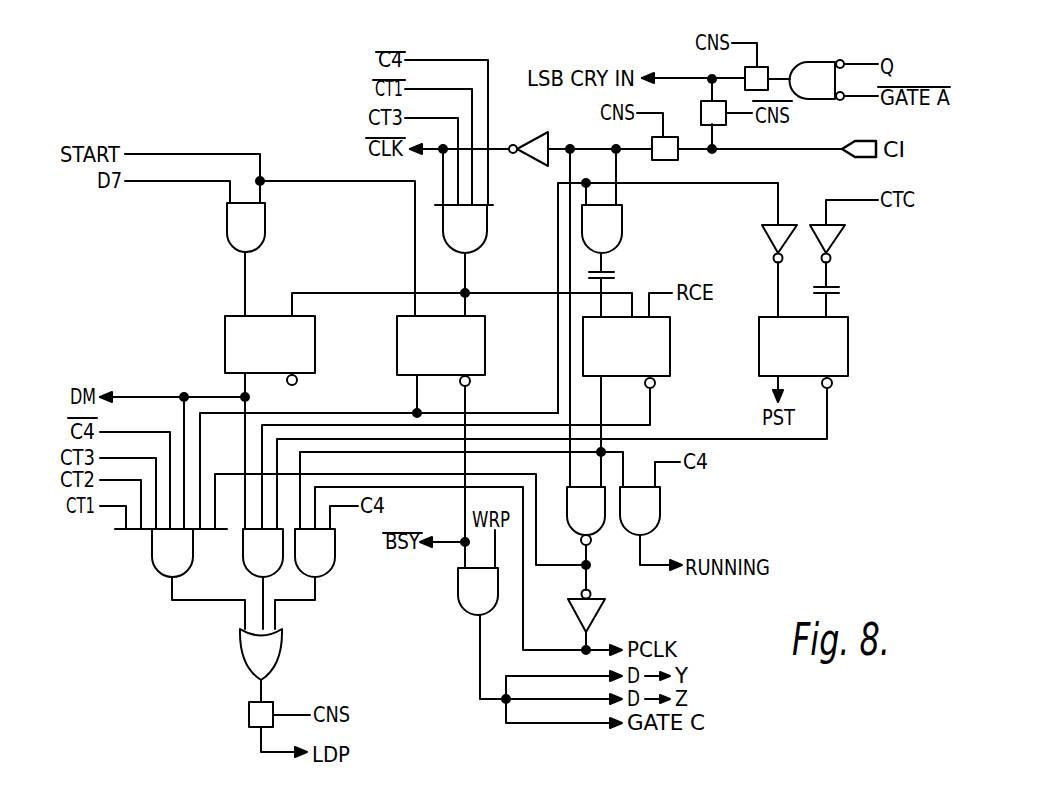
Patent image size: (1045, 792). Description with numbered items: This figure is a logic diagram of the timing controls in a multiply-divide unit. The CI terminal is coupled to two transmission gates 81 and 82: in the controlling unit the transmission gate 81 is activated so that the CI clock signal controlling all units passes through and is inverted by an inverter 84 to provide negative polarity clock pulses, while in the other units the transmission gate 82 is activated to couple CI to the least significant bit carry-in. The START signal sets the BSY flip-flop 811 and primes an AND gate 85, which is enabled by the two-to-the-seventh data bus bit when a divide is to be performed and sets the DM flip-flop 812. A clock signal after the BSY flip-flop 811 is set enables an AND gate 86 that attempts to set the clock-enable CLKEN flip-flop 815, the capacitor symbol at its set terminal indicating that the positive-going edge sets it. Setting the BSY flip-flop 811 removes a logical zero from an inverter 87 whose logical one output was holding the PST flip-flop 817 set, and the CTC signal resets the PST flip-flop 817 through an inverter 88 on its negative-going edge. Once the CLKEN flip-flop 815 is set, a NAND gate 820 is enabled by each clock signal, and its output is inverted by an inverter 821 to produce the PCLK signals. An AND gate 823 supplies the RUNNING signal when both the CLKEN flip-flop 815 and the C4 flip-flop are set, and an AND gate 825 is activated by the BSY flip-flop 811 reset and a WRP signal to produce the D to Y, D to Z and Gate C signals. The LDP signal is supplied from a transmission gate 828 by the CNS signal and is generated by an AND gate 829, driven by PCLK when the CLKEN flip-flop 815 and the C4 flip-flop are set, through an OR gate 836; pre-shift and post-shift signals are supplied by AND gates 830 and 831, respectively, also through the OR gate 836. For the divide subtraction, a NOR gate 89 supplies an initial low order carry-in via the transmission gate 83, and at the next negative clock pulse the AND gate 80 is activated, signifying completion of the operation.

The AND gate 80 is at (488, 228).
The transmission gate 81 is at (678, 158).
The transmission gate 82 is at (701, 107).
The transmission gate 83 is at (768, 68).
The inverter 84 is at (541, 135).
The AND gate 85 is at (266, 225).
The AND gate 86 is at (623, 228).
The inverter 87 is at (766, 240).
The inverter 88 is at (842, 240).
The NOR gate 89 is at (806, 61).
The BSY flip-flop 811 is at (485, 344).
The DM flip-flop 812 is at (315, 344).
The clock-enable (CLKEN) flip-flop 815 is at (670, 344).
The PST flip-flop 817 is at (848, 344).
The NAND gate 820 is at (567, 514).
The inverter 821 is at (604, 614).
The AND gate 823 is at (660, 506).
The AND gate 825 is at (458, 600).
The transmission gate 828 is at (249, 713).
The AND gate 829 is at (335, 566).
The AND gate 830 is at (243, 566).
The AND gate 831 is at (152, 562).
The OR gate 836 is at (240, 657).